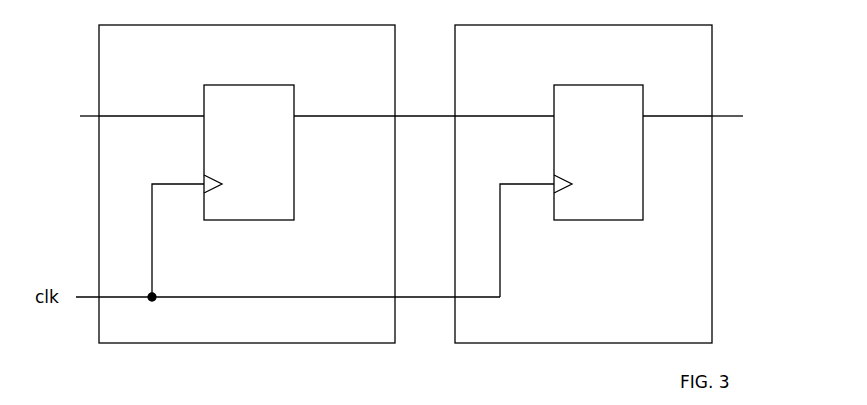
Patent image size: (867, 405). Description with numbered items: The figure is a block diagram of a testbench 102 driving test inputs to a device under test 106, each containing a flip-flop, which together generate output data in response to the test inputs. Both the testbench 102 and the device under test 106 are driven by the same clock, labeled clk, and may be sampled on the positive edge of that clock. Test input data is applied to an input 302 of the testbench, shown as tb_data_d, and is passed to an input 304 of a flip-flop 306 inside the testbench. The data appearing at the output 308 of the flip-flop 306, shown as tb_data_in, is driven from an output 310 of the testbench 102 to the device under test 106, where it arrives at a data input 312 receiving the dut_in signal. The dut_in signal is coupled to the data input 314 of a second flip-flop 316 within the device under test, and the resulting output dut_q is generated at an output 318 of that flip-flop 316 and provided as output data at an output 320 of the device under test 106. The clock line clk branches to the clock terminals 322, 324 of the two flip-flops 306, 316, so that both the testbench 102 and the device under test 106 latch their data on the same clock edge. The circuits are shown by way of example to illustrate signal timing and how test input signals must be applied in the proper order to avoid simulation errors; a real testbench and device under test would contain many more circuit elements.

The testbench 102 is at (99, 200).
The device under test 106 is at (712, 208).
The input 302 is at (99, 120).
The input of flip-flop 304 is at (204, 119).
The flip-flop 306 is at (251, 222).
The output 308 is at (296, 119).
The output of the testbench 310 is at (397, 112).
The data input 312 is at (453, 119).
The data input of flip-flop 314 is at (552, 119).
The flip-flop 316 is at (601, 222).
The output of the flip-flop 318 is at (645, 119).
The output of DUT 320 is at (714, 113).
The testbench flip-flop clock input 322 is at (204, 187).
The DUT flip-flop clock input 324 is at (552, 187).